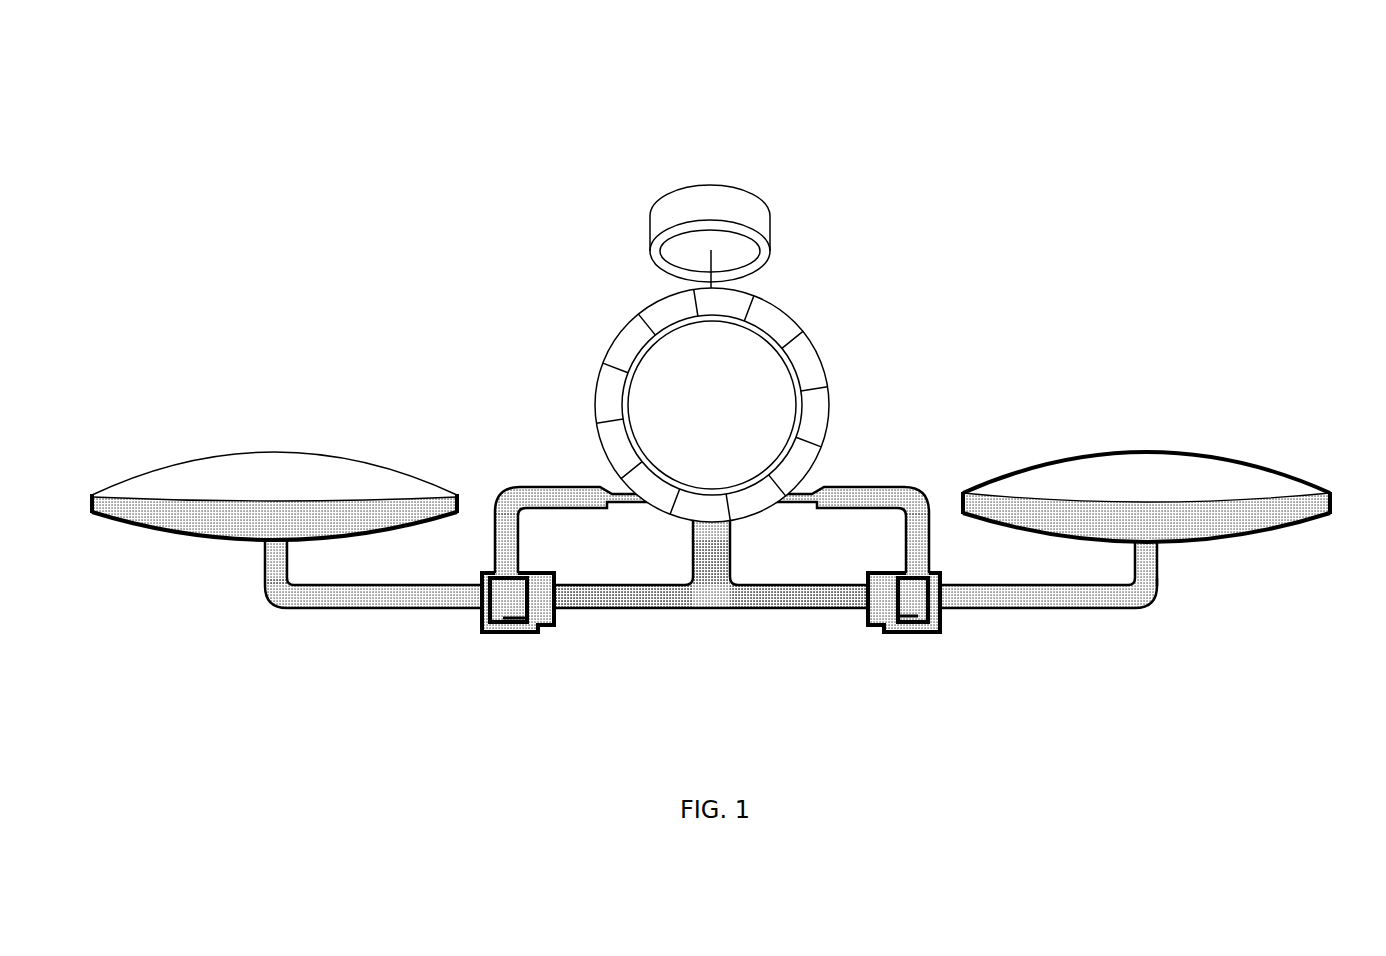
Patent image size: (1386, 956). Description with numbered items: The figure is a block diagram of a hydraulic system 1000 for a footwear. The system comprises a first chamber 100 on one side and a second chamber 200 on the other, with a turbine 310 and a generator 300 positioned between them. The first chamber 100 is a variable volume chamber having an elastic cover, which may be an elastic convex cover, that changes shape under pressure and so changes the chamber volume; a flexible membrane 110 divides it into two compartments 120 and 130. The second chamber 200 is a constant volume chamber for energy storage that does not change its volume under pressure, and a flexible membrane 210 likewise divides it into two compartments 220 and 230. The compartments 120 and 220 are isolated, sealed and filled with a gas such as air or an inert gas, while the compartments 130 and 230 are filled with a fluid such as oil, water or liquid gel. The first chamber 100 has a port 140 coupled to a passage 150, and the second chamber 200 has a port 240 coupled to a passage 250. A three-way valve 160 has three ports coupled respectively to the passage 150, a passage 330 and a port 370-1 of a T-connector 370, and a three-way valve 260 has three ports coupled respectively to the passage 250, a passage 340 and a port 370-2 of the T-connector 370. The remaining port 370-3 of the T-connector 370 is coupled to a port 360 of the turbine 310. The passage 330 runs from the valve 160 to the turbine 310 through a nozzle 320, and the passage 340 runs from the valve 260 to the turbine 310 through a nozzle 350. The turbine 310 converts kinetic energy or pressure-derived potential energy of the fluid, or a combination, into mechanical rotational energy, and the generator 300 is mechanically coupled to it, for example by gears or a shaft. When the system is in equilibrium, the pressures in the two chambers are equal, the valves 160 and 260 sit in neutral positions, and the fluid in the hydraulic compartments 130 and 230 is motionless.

The hydraulic system 1000 is at (703, 78).
The first chamber 100 is at (274, 489).
The flexible membrane 110 is at (320, 495).
The compartment 120 is at (207, 463).
The compartment 130 is at (190, 523).
The port 140 is at (272, 552).
The passage 150 is at (380, 612).
The 3-way valve 160 is at (512, 635).
The second chamber 200 is at (1149, 508).
The flexible membrane 210 is at (1180, 498).
The compartment 220 is at (1047, 462).
The compartment 230 is at (1215, 530).
The port 240 is at (1148, 548).
The passage 250 is at (1068, 612).
The 3-way valve 260 is at (915, 632).
The generator 300 is at (768, 232).
The turbine 310 is at (595, 382).
The nozzle 320 is at (613, 495).
The passage 330 is at (490, 561).
The passage 340 is at (933, 560).
The nozzle 350 is at (813, 491).
The port 360 is at (696, 550).
The T-connector 370 is at (711, 638).
The port 370-1 is at (640, 609).
The port 370-2 is at (768, 603).
The port 370-3 is at (690, 567).